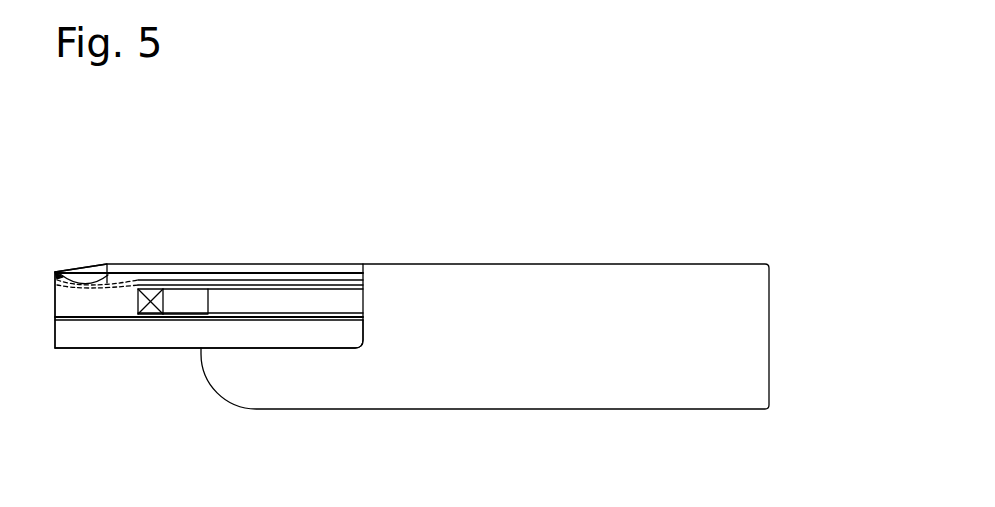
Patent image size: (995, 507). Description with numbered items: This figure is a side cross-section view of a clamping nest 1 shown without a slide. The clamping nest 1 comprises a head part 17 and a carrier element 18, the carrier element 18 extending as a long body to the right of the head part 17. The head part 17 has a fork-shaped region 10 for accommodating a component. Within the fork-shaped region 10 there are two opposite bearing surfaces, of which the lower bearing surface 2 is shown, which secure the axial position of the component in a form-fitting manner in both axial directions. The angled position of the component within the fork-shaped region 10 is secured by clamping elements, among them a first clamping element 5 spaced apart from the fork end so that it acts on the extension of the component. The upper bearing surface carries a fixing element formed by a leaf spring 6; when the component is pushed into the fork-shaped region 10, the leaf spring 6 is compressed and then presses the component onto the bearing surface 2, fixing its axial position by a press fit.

The clamping nest 1 is at (323, 187).
The bearing surface 2 is at (102, 318).
The first clamping element 5 is at (168, 302).
The leaf spring 6 is at (118, 280).
The fork-shaped region 10 is at (95, 270).
The head part 17 is at (297, 337).
The carrier element 18 is at (528, 282).